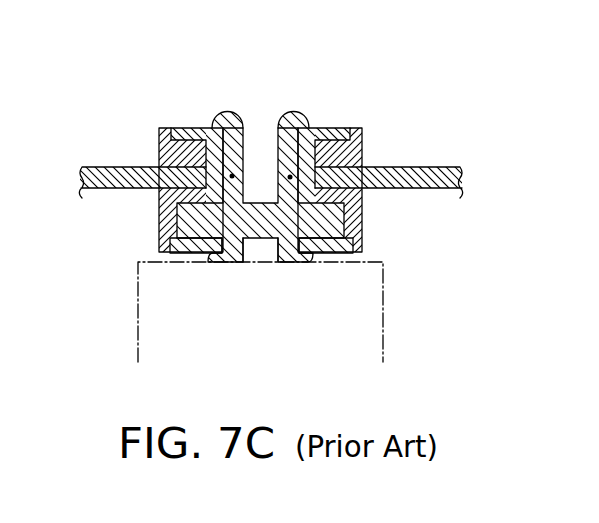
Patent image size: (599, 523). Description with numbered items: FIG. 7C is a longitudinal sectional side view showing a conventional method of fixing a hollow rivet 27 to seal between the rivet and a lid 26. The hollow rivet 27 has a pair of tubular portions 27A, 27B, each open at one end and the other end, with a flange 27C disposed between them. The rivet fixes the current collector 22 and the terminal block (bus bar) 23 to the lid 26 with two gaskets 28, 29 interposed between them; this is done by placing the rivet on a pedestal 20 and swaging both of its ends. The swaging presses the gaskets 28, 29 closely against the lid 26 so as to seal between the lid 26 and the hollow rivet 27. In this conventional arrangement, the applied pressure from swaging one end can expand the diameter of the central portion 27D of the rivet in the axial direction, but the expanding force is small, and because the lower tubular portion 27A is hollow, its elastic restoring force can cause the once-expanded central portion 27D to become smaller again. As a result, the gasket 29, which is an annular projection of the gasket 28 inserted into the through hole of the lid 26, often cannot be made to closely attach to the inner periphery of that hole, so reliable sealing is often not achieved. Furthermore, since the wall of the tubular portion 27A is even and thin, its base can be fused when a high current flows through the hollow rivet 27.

The pedestal 20 is at (383, 297).
The current collector 22 is at (326, 128).
The terminal block (bus bar) 23 is at (320, 263).
The lid 26 is at (419, 175).
The hollow rivet 27 is at (228, 110).
The lower tubular portion 27A is at (200, 128).
The tubular portion 27B is at (290, 177).
The flange 27C is at (198, 240).
The central portion 27D is at (232, 177).
The gasket 28 is at (362, 141).
The gasket 29 is at (168, 214).